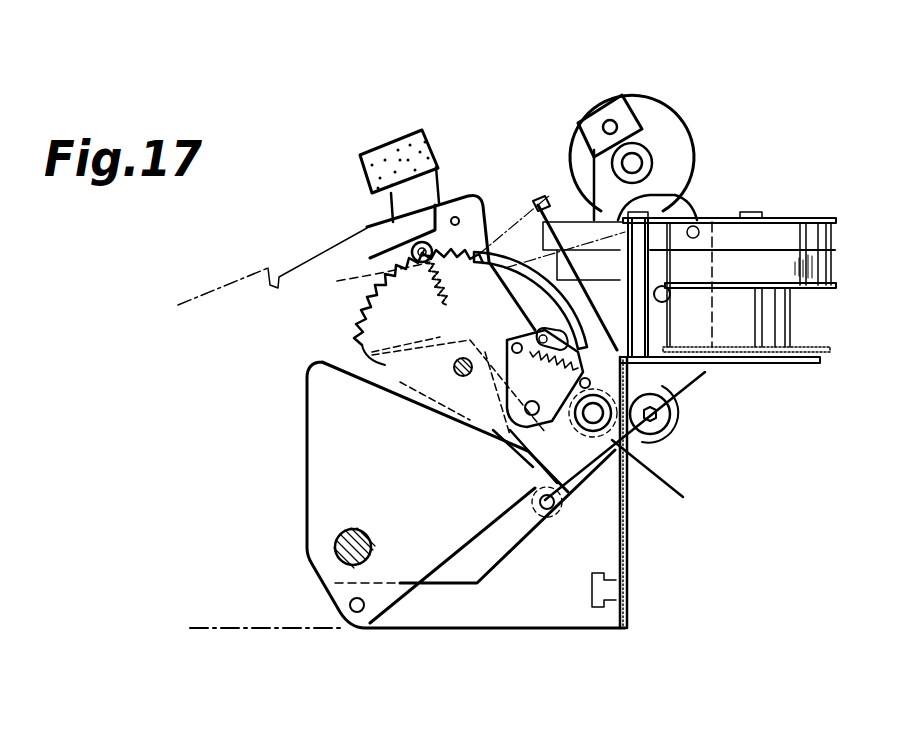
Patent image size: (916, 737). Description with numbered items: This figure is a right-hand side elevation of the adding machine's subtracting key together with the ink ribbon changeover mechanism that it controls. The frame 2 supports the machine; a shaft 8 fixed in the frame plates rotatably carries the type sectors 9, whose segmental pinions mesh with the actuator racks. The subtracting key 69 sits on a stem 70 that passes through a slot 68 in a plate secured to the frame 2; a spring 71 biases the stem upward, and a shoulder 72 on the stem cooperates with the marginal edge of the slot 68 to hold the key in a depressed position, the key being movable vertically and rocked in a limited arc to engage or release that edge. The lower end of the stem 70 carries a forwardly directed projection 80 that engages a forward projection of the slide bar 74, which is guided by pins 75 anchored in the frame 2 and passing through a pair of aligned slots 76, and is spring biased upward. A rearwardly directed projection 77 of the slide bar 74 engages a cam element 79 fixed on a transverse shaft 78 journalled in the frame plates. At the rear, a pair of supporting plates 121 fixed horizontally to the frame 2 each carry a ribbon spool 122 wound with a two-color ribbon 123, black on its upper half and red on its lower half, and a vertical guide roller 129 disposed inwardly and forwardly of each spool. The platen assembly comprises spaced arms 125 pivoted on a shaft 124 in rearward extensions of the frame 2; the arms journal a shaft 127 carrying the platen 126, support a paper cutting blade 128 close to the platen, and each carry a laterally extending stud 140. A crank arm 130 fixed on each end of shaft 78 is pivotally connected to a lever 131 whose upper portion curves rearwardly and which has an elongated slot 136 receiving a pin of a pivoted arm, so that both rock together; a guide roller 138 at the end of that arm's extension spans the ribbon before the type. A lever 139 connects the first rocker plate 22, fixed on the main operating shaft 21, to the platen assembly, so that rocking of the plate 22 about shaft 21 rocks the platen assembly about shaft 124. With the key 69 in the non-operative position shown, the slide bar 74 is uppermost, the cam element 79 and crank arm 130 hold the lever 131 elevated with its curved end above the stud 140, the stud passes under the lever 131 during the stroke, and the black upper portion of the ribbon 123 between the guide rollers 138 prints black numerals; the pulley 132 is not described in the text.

The frame 2 is at (305, 612).
The shaft 8 is at (455, 372).
The type sectors 9 is at (375, 320).
The main operating shaft 21 is at (337, 533).
The first rocker plate 22 is at (318, 447).
The slot 68 is at (388, 215).
The subtracting key 69 is at (372, 168).
The stem 70 is at (410, 193).
The spring 71 is at (383, 258).
The shoulder 72 is at (440, 205).
The slide bar 74 is at (530, 495).
The pins 75 is at (533, 490).
The slots 76 is at (533, 492).
The rearwardly directed projection 77 is at (467, 481).
The transverse shaft 78 is at (650, 490).
The cam element 79 is at (515, 460).
The forwardly directed projection 80 is at (375, 279).
The supporting plates 121 is at (803, 363).
The ribbon spool 122 is at (813, 287).
The two-color ribbon 123 is at (815, 261).
The shaft 124 is at (679, 318).
The arms 125 is at (642, 130).
The platen 126 is at (660, 120).
The shaft 127 is at (636, 167).
The paper cutting blade 128 is at (588, 118).
The vertical guide rollers 129 is at (662, 194).
The crank arm 130 is at (690, 400).
The lever 131 is at (695, 200).
The roller 132 is at (620, 445).
The elongated slot 136 is at (597, 290).
The guide roller 138 is at (556, 225).
The lever 139 is at (598, 505).
The stud 140 is at (720, 208).